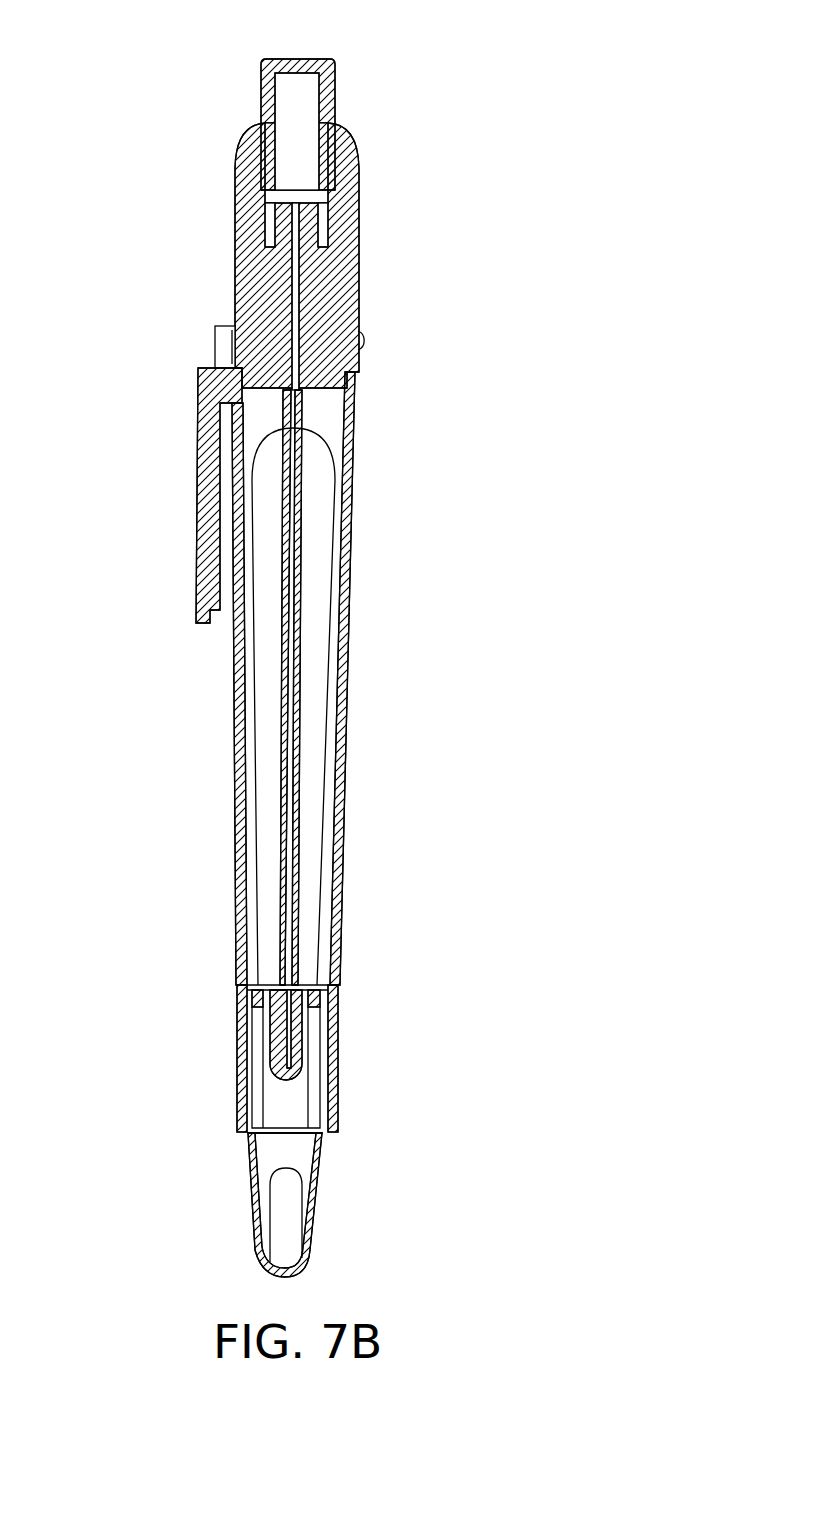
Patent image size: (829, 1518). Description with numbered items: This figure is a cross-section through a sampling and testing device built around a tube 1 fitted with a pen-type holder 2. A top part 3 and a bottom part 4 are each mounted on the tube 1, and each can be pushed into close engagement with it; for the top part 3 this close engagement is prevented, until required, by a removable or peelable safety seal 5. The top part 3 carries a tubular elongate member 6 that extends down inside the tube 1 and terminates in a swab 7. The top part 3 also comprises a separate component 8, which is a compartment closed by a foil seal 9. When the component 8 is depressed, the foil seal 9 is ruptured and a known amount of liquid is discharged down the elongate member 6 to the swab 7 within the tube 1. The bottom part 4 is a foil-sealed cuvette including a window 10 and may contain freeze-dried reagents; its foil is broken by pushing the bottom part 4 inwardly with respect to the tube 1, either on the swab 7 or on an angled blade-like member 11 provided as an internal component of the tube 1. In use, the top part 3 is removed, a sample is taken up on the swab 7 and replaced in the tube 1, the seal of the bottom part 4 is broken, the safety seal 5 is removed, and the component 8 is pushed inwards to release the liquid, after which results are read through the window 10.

The tube 1 is at (352, 578).
The pen-type holder 2 is at (198, 458).
The top part 3 is at (358, 222).
The bottom part 4 is at (320, 1175).
The safety seal 5 is at (212, 338).
The tubular elongate member 6 is at (300, 725).
The swab 7 is at (300, 1068).
The component 8 is at (333, 70).
The foil seal 9 is at (297, 187).
The window 10 is at (293, 1213).
The angled blade-like member 11 is at (322, 1013).